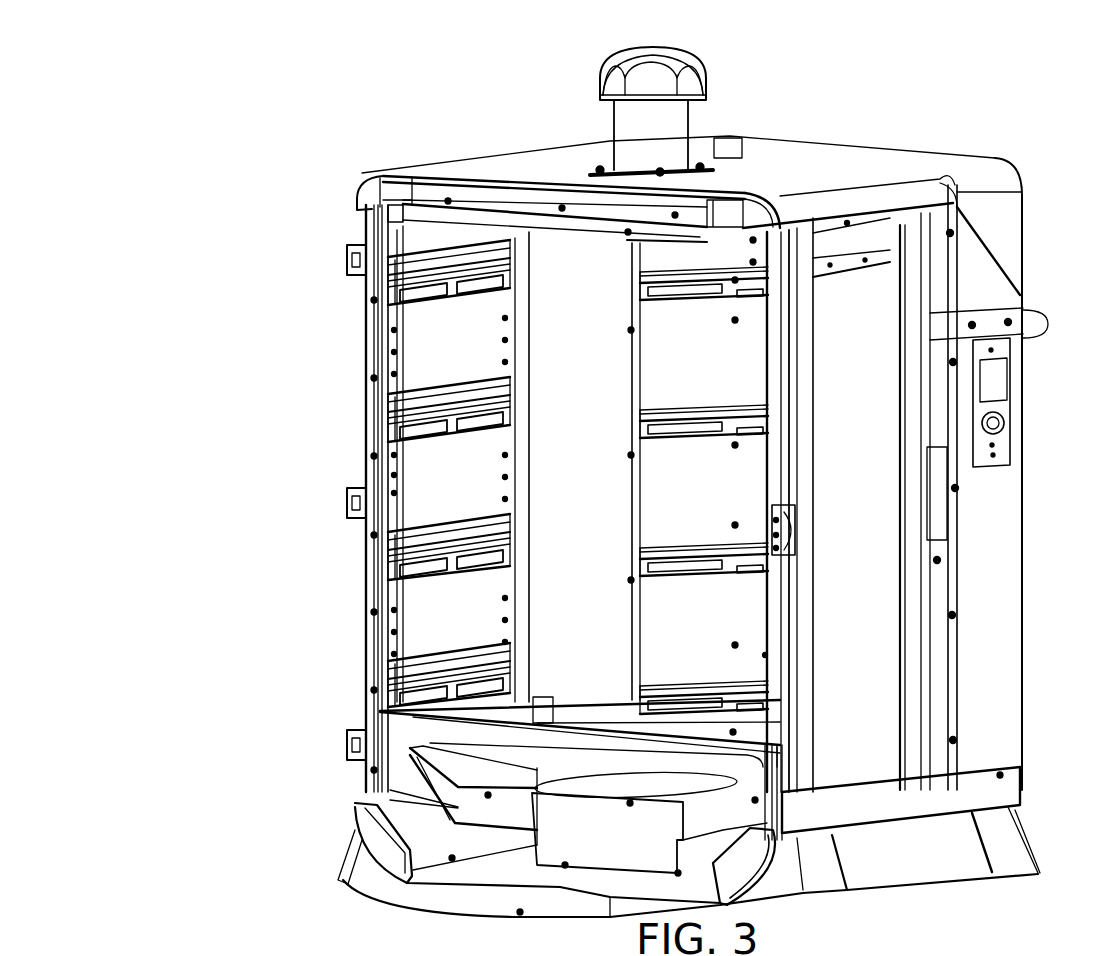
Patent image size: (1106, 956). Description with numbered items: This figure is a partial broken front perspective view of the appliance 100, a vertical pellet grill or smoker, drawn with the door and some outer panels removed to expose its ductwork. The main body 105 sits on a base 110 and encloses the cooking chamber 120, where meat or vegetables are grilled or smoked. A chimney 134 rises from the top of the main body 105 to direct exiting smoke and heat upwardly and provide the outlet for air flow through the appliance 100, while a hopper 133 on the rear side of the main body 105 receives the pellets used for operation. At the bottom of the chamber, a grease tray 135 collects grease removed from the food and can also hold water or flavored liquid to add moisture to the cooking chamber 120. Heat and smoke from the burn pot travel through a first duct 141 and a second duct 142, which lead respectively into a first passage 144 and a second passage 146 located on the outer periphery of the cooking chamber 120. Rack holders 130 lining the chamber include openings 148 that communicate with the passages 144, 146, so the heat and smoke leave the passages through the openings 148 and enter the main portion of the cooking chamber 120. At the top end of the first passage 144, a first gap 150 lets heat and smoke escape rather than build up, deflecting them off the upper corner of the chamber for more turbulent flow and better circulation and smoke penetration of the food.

The appliance 100 is at (216, 134).
The main body 105 is at (458, 158).
The chimney 134 is at (661, 130).
The hopper 133 is at (1010, 220).
The first gap 150 is at (397, 218).
The openings 148 is at (503, 277).
The rack holders 130 is at (410, 397).
The cooking chamber 120 is at (733, 370).
The first passage 144 is at (377, 553).
The second passage 146 is at (775, 645).
The grease tray 135 is at (383, 717).
The first duct 141 is at (458, 805).
The second duct 142 is at (733, 817).
The base 110 is at (937, 855).